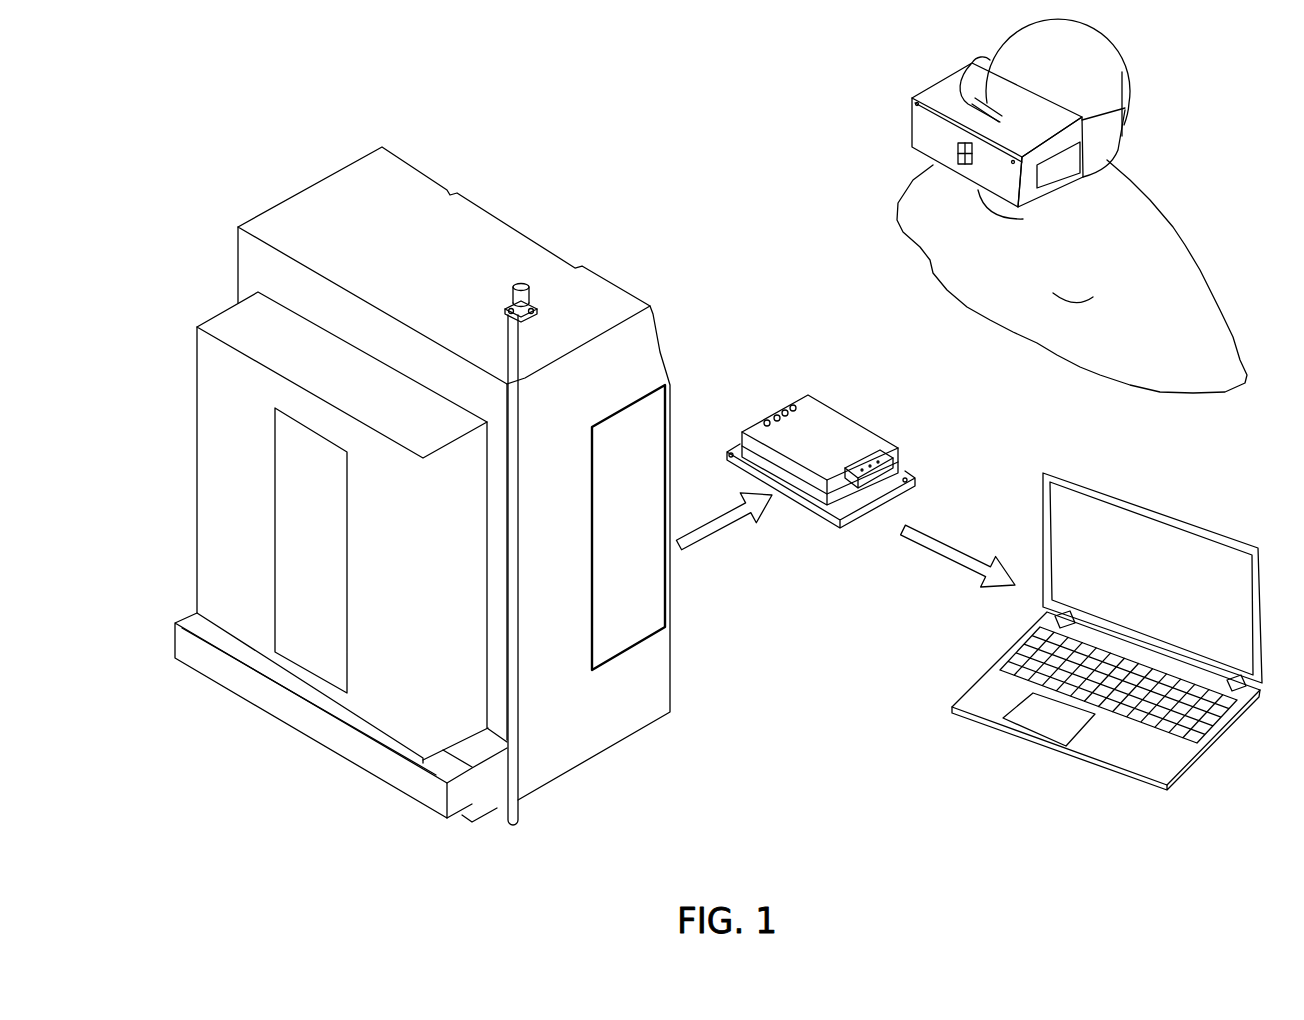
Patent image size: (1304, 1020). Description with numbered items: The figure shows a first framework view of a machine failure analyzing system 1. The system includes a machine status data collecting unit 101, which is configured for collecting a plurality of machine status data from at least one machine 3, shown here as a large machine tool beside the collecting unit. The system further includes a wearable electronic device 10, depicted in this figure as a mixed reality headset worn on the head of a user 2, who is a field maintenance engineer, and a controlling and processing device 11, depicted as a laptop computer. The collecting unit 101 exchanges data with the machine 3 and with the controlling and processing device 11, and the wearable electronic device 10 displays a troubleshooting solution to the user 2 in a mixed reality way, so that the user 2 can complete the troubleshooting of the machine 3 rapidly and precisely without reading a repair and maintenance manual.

The machine failure analyzing system 1 is at (607, 96).
The user 2 is at (1178, 224).
The machine 3 is at (397, 146).
The wearable electronic device 10 is at (916, 78).
The controlling and processing device 11 is at (1083, 470).
The machine status data collecting unit 101 is at (870, 440).